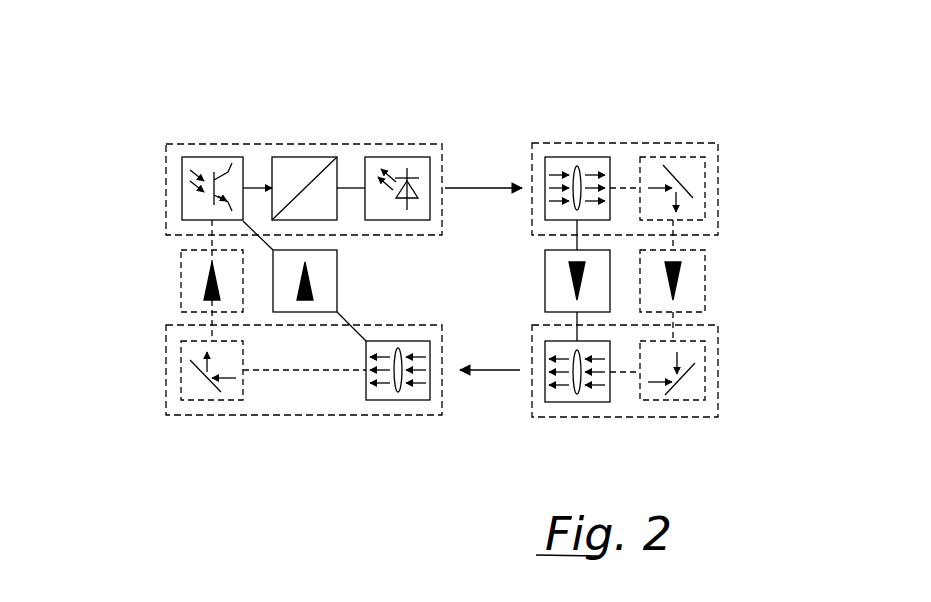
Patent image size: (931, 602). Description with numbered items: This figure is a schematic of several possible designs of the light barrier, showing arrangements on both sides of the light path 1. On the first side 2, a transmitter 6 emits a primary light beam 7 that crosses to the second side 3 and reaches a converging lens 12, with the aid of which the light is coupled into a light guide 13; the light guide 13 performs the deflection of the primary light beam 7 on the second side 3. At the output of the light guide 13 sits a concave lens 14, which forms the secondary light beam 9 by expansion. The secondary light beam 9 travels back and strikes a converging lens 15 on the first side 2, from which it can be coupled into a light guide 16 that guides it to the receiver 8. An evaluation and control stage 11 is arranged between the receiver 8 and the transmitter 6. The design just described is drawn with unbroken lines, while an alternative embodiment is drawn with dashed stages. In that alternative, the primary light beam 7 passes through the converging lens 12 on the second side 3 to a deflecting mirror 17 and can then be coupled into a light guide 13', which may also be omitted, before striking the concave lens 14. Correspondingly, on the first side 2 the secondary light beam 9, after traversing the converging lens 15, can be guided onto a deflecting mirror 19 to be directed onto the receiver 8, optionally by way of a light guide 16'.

The light path 1 is at (490, 168).
The first side 2 is at (298, 137).
The second side 3 is at (625, 135).
The transmitter 6 is at (387, 157).
The primary light beam 7 is at (473, 192).
The receiver 8 is at (195, 157).
The secondary light beam 9 is at (485, 382).
The evaluation and control stage 11 is at (328, 157).
The converging lens 12 is at (558, 157).
The light guide 13 is at (545, 284).
The light guide 13' is at (731, 274).
The concave lens 14 is at (565, 403).
The converging lens 15 is at (382, 400).
The light guide 16 is at (349, 281).
The light guide 16' is at (149, 294).
The deflecting mirror 17 is at (708, 172).
The deflecting mirror 19 is at (216, 400).